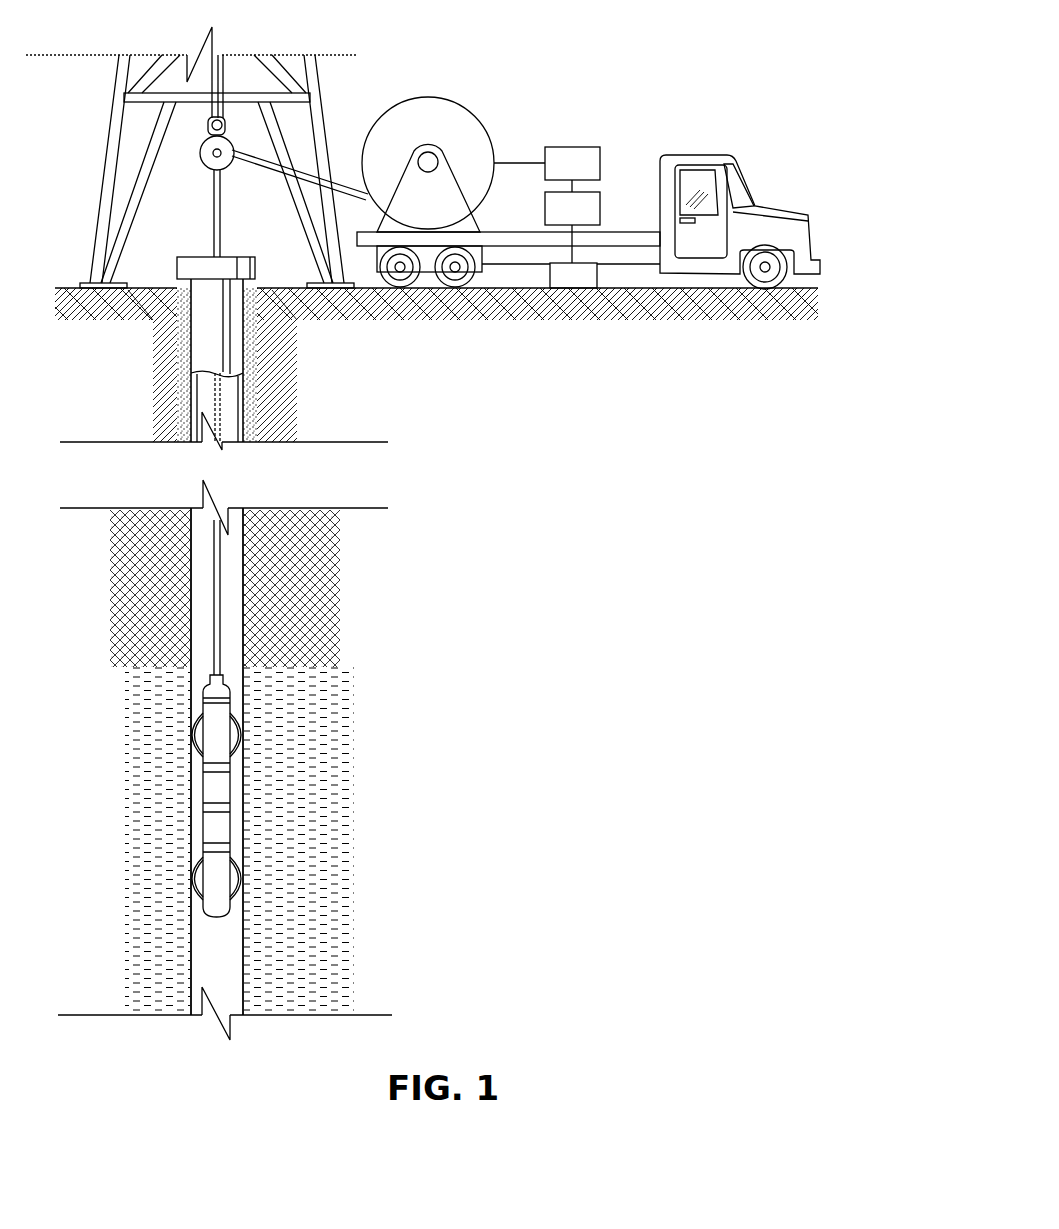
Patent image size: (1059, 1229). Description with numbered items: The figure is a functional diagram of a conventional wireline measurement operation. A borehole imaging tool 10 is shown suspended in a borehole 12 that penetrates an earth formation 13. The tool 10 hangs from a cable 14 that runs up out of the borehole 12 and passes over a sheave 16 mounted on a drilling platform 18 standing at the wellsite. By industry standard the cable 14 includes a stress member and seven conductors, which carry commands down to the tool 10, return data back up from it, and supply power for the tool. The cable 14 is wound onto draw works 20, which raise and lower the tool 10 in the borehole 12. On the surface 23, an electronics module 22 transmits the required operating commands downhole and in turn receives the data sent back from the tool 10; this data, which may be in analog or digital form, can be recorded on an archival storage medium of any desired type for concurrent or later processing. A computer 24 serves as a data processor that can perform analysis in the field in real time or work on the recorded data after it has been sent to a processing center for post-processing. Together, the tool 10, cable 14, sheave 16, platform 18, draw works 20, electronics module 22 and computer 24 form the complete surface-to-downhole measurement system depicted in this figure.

The borehole imaging tool 10 is at (234, 786).
The borehole 12 is at (186, 775).
The earth formation 13 is at (369, 620).
The cable 14 is at (212, 232).
The sheave 16 is at (200, 152).
The drilling platform 18 is at (110, 103).
The draw works 20 is at (430, 96).
The electronics module 22 is at (603, 162).
The surface 23 is at (68, 287).
The computer 24 is at (603, 208).